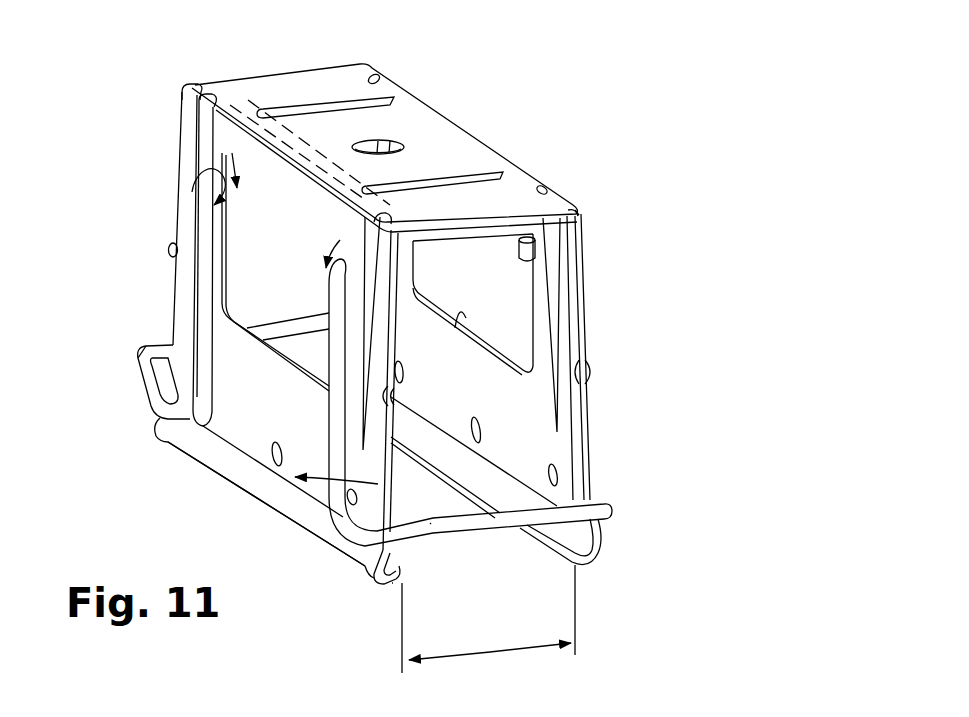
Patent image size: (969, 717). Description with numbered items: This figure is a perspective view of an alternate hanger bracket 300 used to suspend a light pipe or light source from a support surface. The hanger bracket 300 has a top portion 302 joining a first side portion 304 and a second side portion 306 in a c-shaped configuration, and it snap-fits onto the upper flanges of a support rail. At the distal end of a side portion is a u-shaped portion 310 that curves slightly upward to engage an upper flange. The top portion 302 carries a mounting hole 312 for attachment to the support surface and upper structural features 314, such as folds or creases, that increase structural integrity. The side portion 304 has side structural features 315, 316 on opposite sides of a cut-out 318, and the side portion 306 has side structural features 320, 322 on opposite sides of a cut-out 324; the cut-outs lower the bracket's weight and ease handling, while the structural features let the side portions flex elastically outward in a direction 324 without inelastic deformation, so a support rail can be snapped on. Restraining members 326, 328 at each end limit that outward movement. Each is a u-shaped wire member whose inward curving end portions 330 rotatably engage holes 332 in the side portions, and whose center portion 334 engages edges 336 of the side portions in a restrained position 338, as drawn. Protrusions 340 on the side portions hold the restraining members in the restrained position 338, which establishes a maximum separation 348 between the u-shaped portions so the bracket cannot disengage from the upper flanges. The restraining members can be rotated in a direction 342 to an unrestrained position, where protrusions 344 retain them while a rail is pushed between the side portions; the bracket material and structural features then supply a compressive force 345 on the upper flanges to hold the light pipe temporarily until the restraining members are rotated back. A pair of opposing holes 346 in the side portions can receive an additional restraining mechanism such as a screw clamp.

The hanger bracket 300 is at (543, 92).
The top portion 302 is at (270, 80).
The first side portion 304 is at (582, 285).
The second side portion 306 is at (178, 282).
The u-shaped portion 310 is at (385, 585).
The mounting hole 312 is at (403, 138).
The upper structural features 314 is at (343, 102).
The side structural feature 315 is at (382, 80).
The side structural feature 316 is at (555, 237).
The cut-out 318 is at (462, 318).
The side structural feature 320 is at (198, 112).
The side structural feature 322 is at (388, 214).
The cut-out / outward flexing direction 324 is at (210, 198).
The restraining member 326 is at (150, 382).
The restraining member 328 is at (330, 527).
The inward curving end portion 330 is at (516, 250).
The hole 332 is at (536, 266).
The center portion 334 is at (472, 525).
The edge 336 is at (173, 333).
The restrained position 338 is at (148, 410).
The protrusion 340 is at (192, 393).
The rotation direction 342 is at (210, 152).
The protrusion 344 is at (168, 250).
The compressive force 345 is at (358, 583).
The opposing holes 346 is at (270, 458).
The maximum separation 348 is at (493, 653).